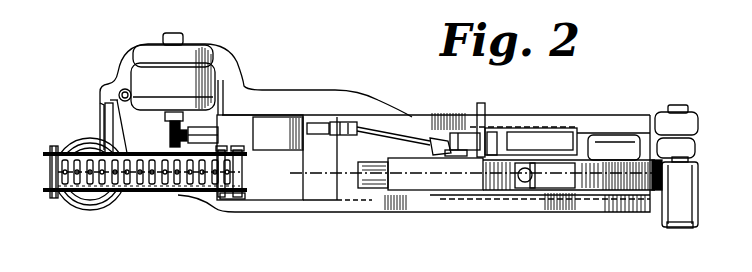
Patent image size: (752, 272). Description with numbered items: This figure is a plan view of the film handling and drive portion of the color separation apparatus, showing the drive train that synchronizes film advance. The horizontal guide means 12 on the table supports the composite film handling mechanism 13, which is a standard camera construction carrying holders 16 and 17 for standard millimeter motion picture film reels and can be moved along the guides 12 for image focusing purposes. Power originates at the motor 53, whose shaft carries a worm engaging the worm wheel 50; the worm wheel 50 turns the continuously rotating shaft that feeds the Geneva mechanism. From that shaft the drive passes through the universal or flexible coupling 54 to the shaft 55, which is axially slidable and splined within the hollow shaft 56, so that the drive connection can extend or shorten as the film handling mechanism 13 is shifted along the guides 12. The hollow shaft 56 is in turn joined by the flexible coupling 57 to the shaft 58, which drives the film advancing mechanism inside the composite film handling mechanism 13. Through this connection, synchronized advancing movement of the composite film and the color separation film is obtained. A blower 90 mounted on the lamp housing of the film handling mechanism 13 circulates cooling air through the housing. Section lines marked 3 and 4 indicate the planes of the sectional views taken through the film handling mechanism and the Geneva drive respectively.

The motor 53 is at (190, 70).
The worm wheel 50 is at (182, 143).
The universal or flexible coupling 54 is at (334, 122).
The shaft 55 is at (412, 137).
The hollow shaft 56 is at (456, 153).
The holder 16 is at (421, 178).
The flexible coupling 57 is at (440, 157).
The shaft 58 is at (470, 158).
The horizontal guide means 12 is at (552, 121).
The composite film handling mechanism 13 is at (537, 195).
The holder 17 is at (607, 180).
The blower 90 is at (670, 213).
The section line 3- 3 is at (207, 178).
The section line 4- 4 is at (152, 125).